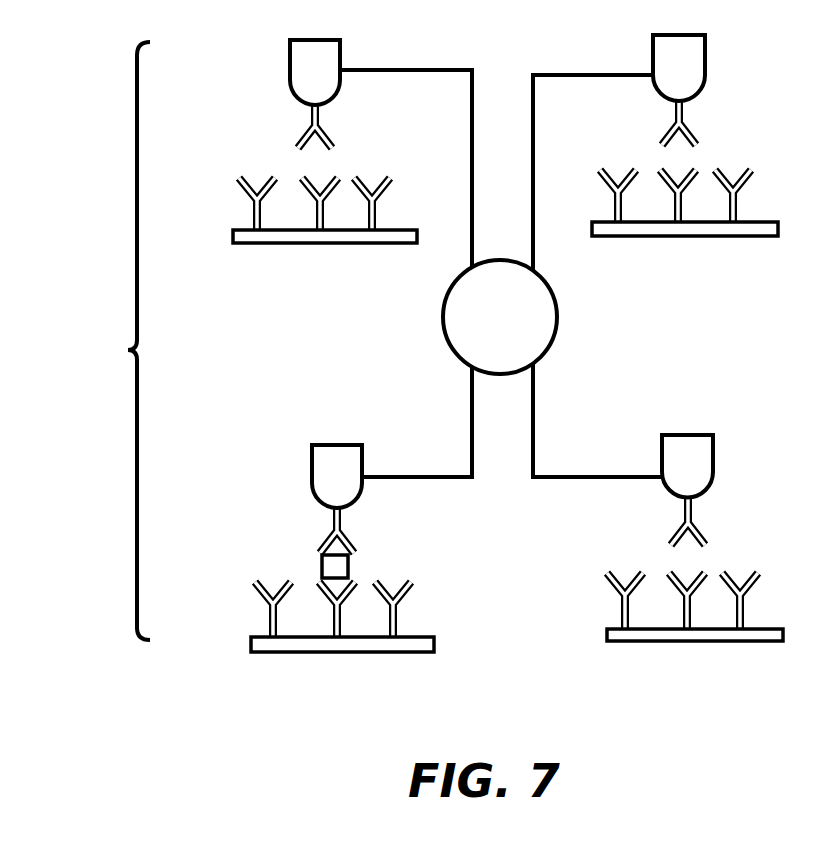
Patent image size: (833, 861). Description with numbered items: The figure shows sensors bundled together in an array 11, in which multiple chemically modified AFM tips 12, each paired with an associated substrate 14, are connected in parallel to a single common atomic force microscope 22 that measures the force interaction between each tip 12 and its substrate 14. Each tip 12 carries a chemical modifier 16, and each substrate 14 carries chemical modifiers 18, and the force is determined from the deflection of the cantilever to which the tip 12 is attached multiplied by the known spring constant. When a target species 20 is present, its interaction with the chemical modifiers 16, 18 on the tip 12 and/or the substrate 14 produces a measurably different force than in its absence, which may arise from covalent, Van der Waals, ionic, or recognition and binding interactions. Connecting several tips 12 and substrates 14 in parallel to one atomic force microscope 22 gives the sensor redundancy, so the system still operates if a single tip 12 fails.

The array 11 is at (119, 341).
The tip 12 is at (333, 48).
The substrate 14 is at (350, 244).
The chemical modifier 16 is at (312, 125).
The chemical modifier 18 is at (255, 214).
The target species 20 is at (322, 572).
The atomic force microscope 22 is at (500, 317).